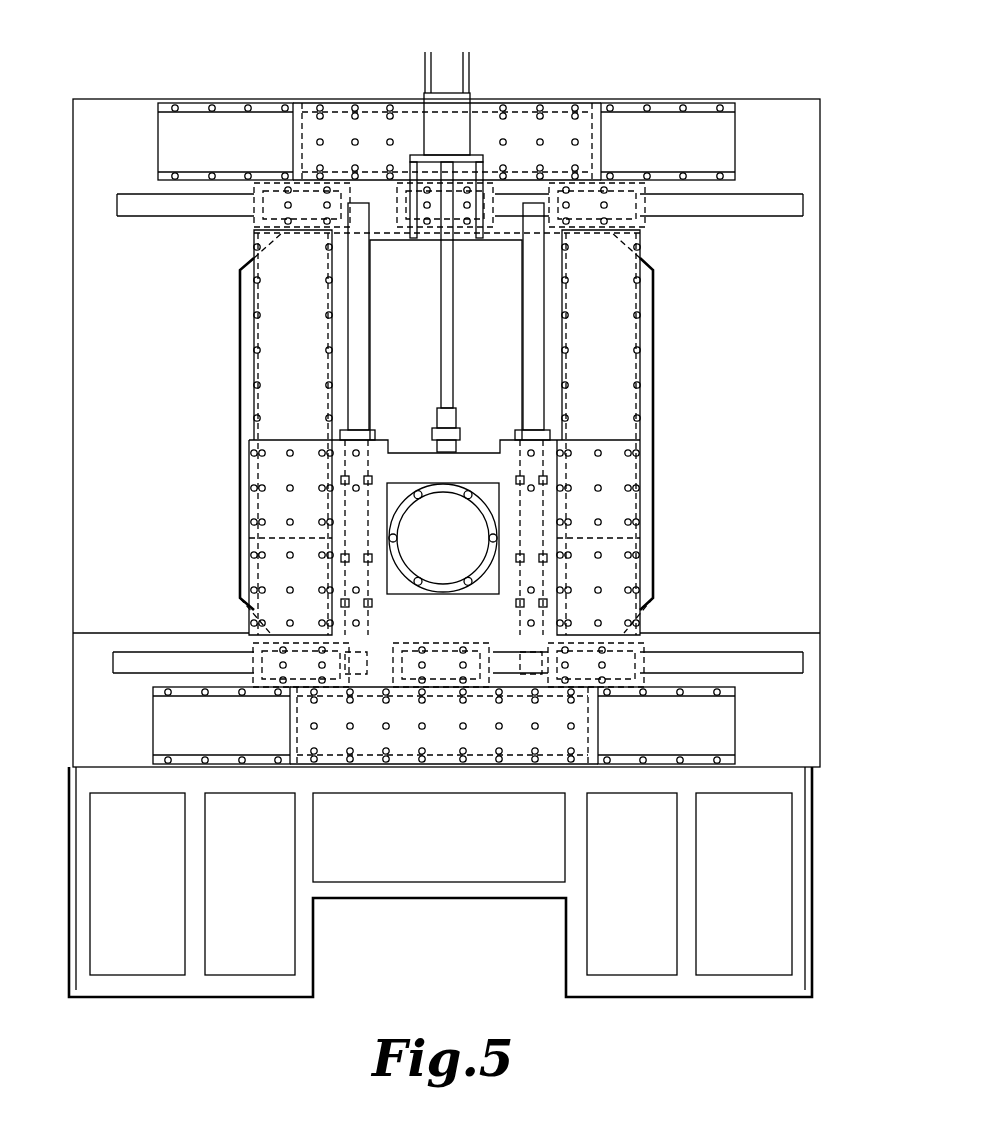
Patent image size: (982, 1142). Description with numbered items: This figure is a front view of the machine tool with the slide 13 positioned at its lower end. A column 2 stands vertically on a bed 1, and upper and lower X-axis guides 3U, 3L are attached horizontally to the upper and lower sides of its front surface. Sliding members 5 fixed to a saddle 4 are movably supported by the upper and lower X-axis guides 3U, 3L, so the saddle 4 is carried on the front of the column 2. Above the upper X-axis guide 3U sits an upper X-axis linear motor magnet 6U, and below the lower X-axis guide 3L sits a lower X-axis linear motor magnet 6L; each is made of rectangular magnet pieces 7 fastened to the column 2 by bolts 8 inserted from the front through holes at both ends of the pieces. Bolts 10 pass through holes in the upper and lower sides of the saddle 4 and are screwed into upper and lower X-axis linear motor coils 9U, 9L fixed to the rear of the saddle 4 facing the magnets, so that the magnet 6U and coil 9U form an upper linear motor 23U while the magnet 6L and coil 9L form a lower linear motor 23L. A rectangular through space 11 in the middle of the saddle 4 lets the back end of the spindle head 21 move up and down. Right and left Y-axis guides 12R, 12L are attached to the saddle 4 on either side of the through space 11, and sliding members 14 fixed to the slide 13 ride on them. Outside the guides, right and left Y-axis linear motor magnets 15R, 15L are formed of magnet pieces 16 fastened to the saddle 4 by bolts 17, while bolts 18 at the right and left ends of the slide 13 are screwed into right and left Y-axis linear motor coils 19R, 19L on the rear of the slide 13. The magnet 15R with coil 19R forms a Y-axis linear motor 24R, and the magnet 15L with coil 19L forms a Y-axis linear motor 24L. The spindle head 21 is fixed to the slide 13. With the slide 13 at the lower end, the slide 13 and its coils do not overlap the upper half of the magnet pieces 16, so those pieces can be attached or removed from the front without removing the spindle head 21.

The bed 1 is at (805, 850).
The column 2 is at (773, 391).
The upper X-axis guide 3U is at (784, 200).
The lower X-axis guide 3L is at (770, 672).
The saddle 4 is at (654, 520).
The sliding members 5 is at (254, 220).
The upper X-axis linear motor magnet 6U is at (640, 100).
The lower X-axis linear motor magnet 6L is at (635, 768).
The magnet pieces 7 is at (725, 140).
The bolts 8 is at (686, 174).
The upper X-axis linear motor coil 9U is at (302, 100).
The lower X-axis linear motor coil 9L is at (290, 740).
The bolts 10 is at (325, 172).
The rectangular through space 11 is at (493, 334).
The left Y-axis guide 12L is at (362, 268).
The right Y-axis guide 12R is at (532, 266).
The slide 13 is at (435, 605).
The sliding members 14 is at (372, 432).
The left Y-axis linear motor magnet 15L is at (252, 304).
The right Y-axis linear motor magnet 15R is at (642, 295).
The magnet pieces 16 is at (268, 266).
The bolts 17 is at (327, 315).
The bolts 18 is at (258, 522).
The left Y-axis linear motor coil 19L is at (255, 624).
The right Y-axis linear motor coil 19R is at (628, 625).
The spindle head 21 is at (455, 524).
The upper linear motor 23U is at (556, 100).
The lower linear motor 23L is at (468, 768).
The Y-axis linear motor 24L is at (249, 462).
The Y-axis linear motor 24R is at (640, 450).